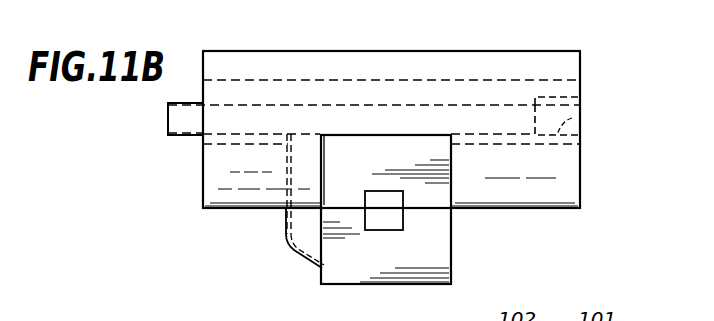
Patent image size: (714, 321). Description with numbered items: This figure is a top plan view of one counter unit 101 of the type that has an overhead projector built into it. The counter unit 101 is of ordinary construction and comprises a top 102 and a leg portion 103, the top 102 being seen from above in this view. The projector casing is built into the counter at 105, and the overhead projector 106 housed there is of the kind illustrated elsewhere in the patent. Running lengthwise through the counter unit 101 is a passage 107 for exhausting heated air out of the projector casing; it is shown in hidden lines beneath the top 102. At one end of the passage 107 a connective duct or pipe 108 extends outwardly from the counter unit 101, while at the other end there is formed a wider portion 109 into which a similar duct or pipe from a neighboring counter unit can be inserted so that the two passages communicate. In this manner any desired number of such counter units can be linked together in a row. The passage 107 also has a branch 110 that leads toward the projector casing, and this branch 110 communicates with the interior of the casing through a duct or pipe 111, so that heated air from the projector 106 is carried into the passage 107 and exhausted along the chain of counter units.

The counter unit 101 is at (466, 62).
The top 102 is at (573, 178).
The leg portion 103 is at (291, 80).
The projector casing location 105 is at (450, 168).
The overhead projector 106 is at (375, 277).
The passage 107 is at (240, 128).
The connective duct or pipe 108 is at (180, 128).
The wider portion 109 is at (580, 118).
The branch 110 is at (288, 137).
The duct or pipe 111 is at (295, 250).